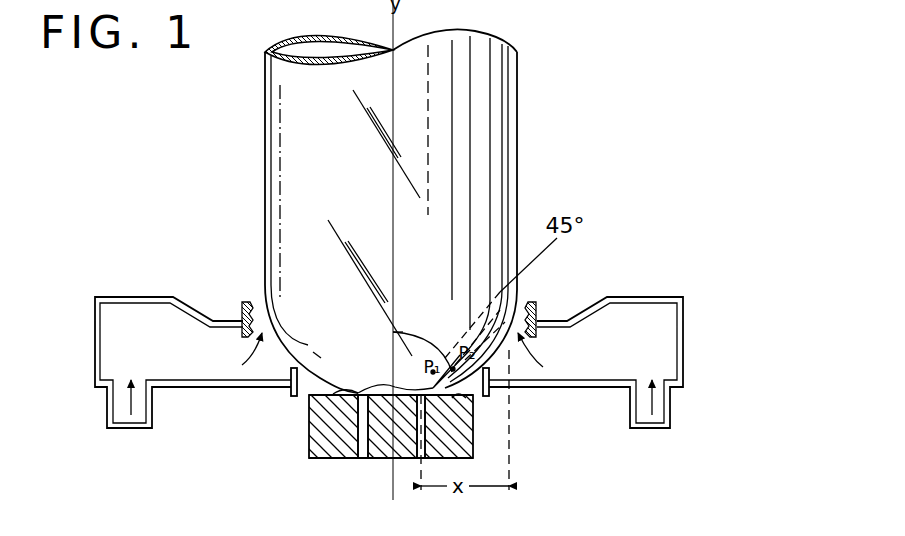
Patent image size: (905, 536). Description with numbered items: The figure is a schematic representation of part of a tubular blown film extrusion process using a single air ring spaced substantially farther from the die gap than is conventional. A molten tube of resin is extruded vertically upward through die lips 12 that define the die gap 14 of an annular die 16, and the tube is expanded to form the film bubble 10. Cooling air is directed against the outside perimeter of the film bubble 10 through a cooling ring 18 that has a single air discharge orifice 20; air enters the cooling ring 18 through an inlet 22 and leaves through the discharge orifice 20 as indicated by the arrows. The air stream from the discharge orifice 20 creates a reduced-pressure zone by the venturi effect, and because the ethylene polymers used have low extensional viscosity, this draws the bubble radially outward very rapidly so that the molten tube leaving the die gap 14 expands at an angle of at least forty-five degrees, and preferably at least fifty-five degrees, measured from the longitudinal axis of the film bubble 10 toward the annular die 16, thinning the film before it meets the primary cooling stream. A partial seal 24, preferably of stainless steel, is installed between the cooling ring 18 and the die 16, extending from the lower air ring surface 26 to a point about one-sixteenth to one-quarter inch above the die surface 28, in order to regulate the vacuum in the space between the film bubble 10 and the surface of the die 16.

The film bubble 10 is at (517, 105).
The die lips 12 is at (373, 393).
The die gap 14 is at (365, 461).
The annular die 16 is at (305, 441).
The cooling ring 18 is at (615, 297).
The air discharge orifice 20 is at (521, 305).
The inlet 22 is at (132, 428).
The partial seal 24 is at (291, 396).
The lower air ring surface 26 is at (183, 387).
The die surface 28 is at (333, 394).